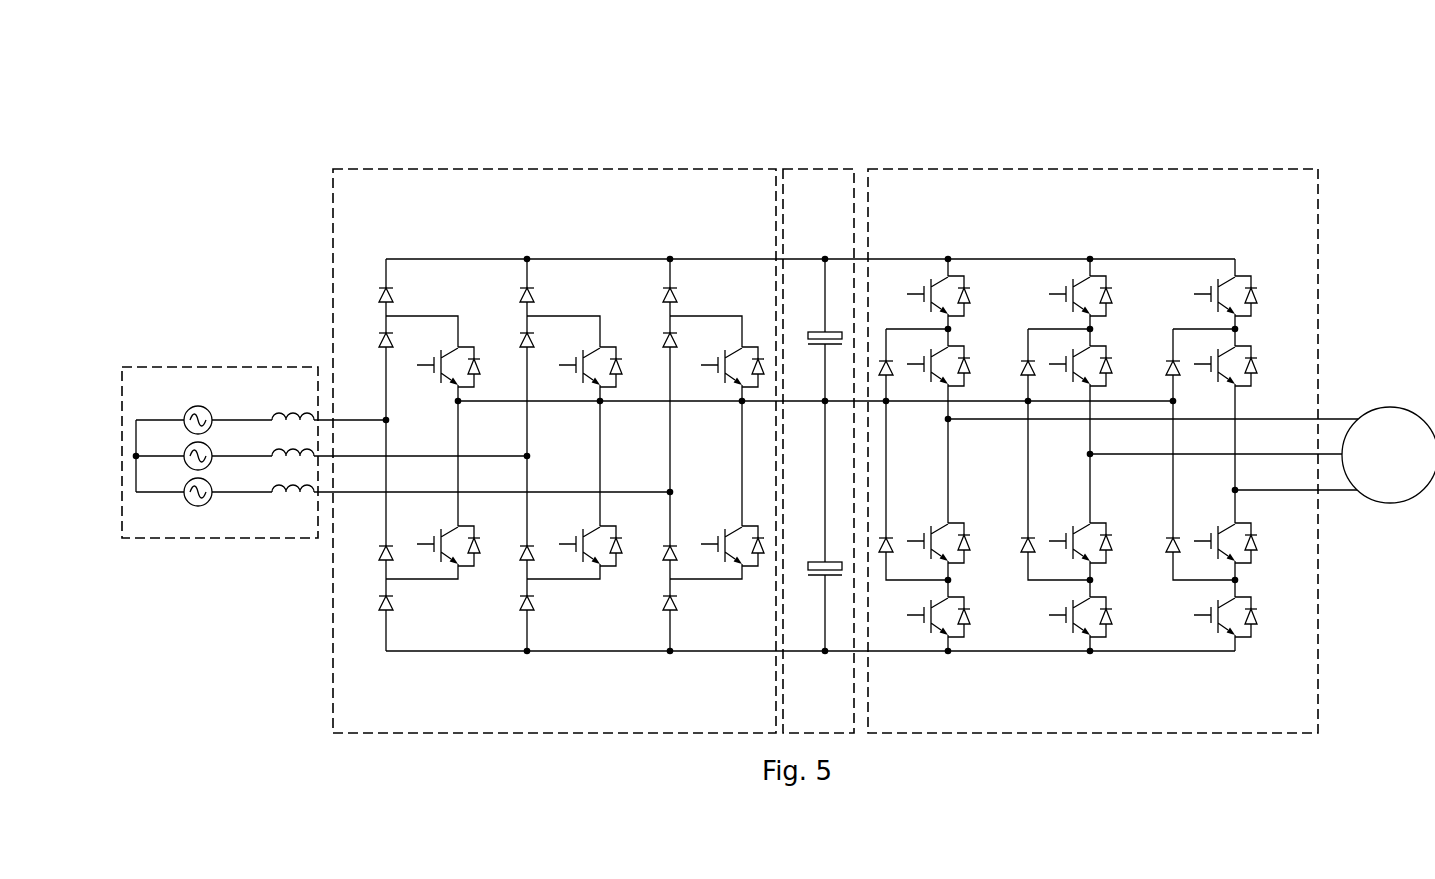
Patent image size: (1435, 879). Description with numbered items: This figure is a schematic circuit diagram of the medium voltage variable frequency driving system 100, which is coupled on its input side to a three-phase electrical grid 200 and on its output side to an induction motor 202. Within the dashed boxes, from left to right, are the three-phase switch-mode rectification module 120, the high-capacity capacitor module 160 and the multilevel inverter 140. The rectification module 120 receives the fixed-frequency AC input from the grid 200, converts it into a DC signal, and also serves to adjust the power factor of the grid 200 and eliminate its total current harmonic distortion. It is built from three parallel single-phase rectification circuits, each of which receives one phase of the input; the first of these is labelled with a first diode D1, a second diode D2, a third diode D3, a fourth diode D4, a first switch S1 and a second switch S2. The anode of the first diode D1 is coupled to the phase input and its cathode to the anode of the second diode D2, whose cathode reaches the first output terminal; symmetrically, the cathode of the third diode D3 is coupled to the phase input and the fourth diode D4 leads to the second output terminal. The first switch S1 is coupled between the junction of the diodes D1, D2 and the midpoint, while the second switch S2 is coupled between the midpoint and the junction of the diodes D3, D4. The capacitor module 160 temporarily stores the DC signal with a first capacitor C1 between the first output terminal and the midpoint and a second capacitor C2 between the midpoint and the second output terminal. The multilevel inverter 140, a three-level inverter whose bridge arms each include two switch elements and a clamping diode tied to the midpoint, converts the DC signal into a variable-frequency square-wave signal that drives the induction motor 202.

The medium voltage variable frequency driving system 100 is at (590, 100).
The three-phase switch-mode rectification module 120 is at (515, 168).
The high-capacity capacitor module 160 is at (810, 168).
The multilevel inverter 140 is at (1080, 168).
The three-phase electrical grid 200 is at (245, 367).
The induction motor 202 is at (1413, 407).
The first diode D1 is at (399, 344).
The second diode D2 is at (399, 297).
The third diode D3 is at (400, 557).
The fourth diode D4 is at (400, 607).
The first switch S1 is at (448, 375).
The second switch S2 is at (448, 537).
The first capacitor C1 is at (819, 326).
The second capacitor C2 is at (819, 556).